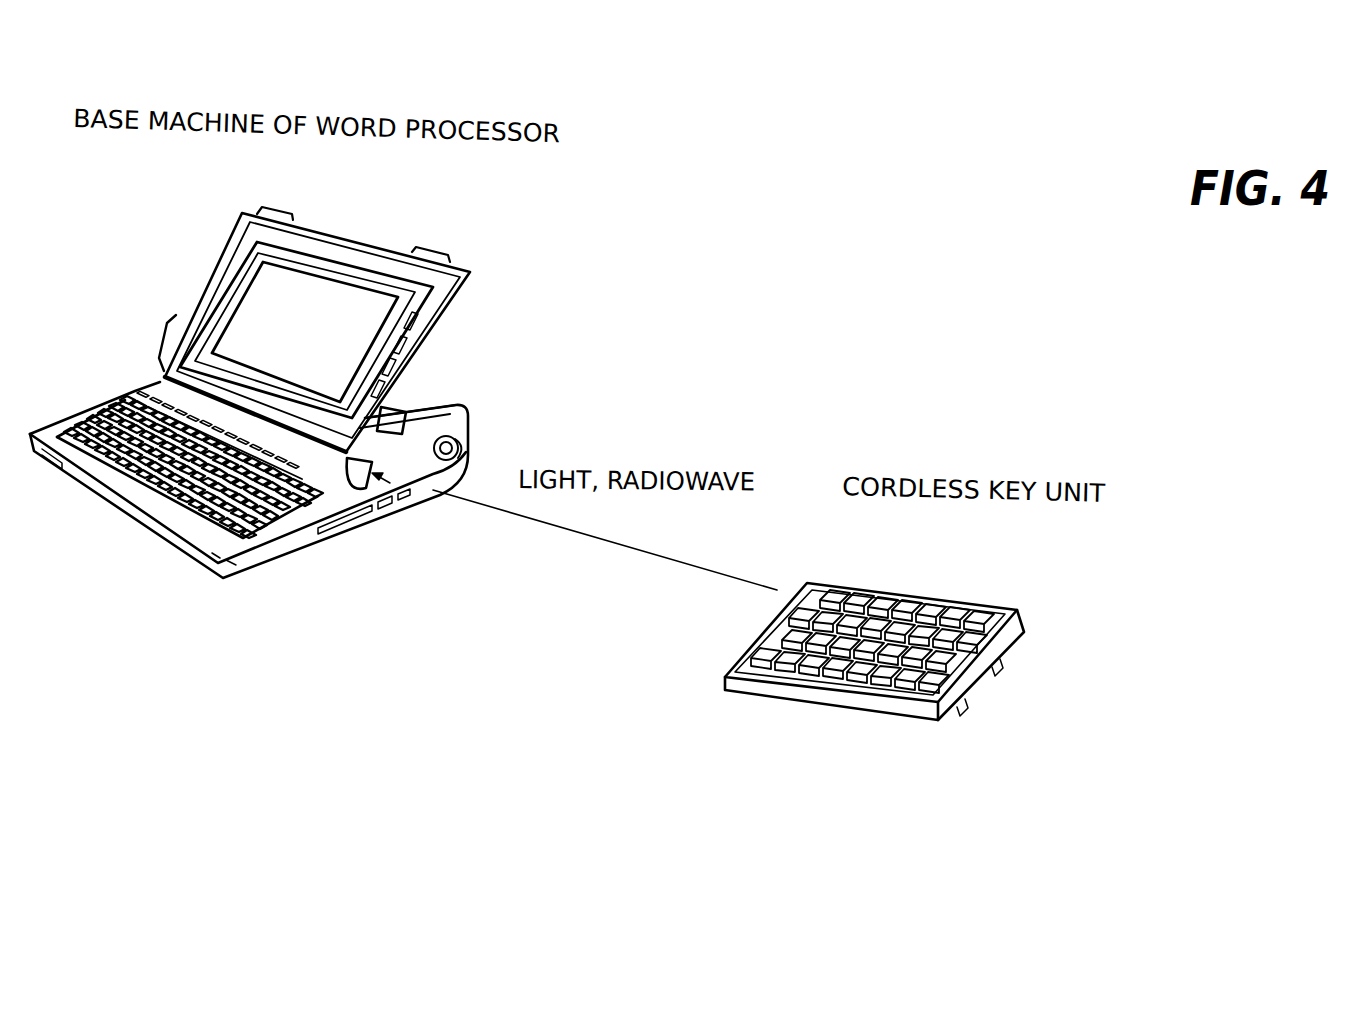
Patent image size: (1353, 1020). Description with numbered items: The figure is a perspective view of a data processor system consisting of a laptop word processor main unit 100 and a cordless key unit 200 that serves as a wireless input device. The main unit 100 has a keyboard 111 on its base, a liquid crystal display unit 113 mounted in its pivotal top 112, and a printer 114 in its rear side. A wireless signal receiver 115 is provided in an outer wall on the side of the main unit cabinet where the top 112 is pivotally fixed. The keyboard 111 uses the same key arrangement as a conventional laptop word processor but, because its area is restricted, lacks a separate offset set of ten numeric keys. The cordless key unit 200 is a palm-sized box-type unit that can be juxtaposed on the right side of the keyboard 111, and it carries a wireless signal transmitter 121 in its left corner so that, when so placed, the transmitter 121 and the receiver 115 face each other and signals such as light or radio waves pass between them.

The main unit 100 is at (190, 268).
The keyboard 111 is at (172, 503).
The pivotal top 112 is at (472, 293).
The liquid crystal display unit 113 is at (370, 307).
The printer 114 is at (430, 402).
The wireless signal receiver 115 is at (452, 426).
The wireless signal transmitter 121 is at (838, 600).
The cordless key unit 200 is at (823, 712).